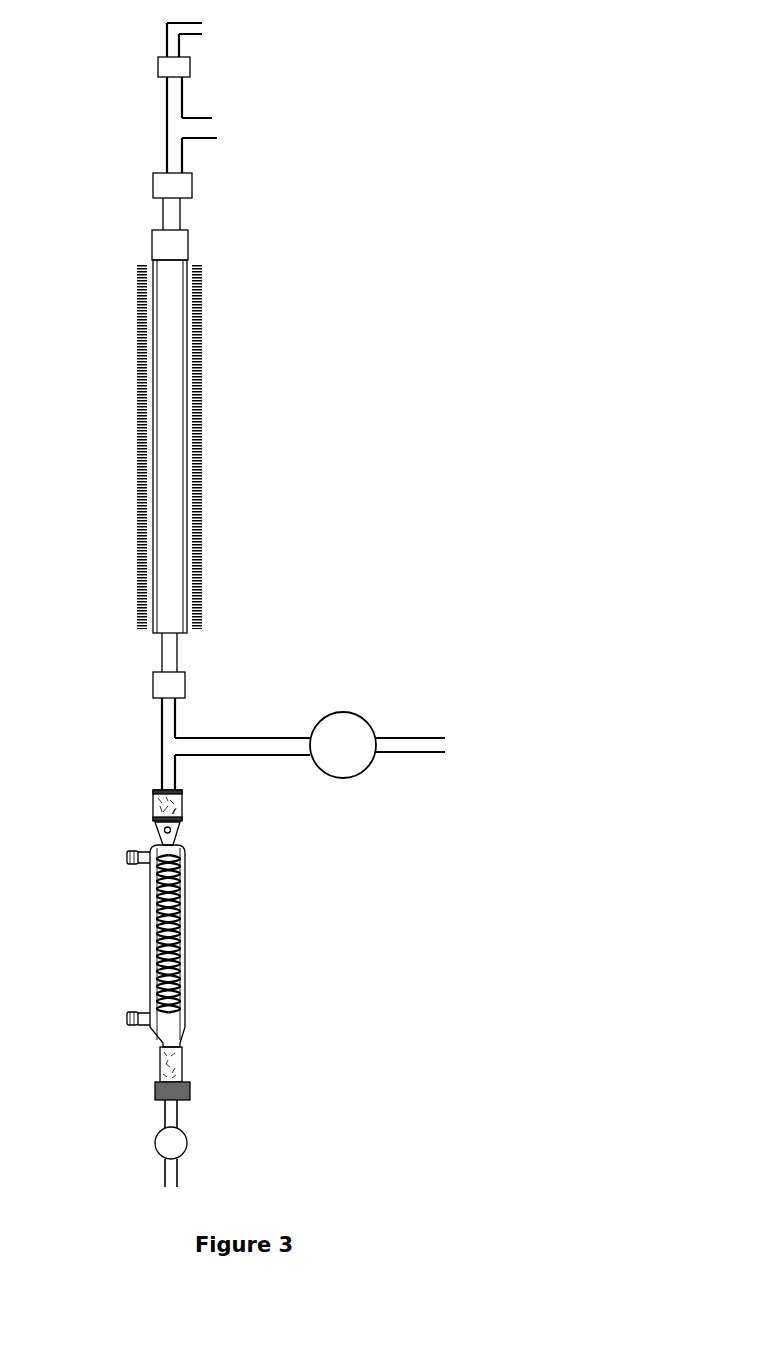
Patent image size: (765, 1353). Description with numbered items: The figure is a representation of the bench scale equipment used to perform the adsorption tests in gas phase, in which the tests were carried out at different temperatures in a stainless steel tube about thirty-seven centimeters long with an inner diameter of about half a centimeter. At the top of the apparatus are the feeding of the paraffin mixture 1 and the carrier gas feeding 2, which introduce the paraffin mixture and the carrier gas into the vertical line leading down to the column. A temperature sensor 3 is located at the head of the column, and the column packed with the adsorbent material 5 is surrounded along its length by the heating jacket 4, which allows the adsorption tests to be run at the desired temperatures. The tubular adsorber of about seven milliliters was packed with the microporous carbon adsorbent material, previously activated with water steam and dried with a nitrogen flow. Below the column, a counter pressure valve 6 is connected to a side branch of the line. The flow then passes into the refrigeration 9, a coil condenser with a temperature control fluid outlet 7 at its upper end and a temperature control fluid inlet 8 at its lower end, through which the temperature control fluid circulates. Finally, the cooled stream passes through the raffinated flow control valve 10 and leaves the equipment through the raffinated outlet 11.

The feeding of the paraffin mixture 1 is at (216, 28).
The carrier gas feeding 2 is at (232, 130).
The temperature sensor 3 is at (195, 267).
The heating jacket 4 is at (211, 368).
The column packed with the adsorbent material 5 is at (174, 398).
The counter pressure valve 6 is at (310, 745).
The temperature control fluid outlet 7 is at (120, 858).
The temperature control fluid inlet 8 is at (111, 1018).
The refrigeration 9 is at (209, 922).
The raffinated flow control valve 10 is at (189, 1143).
The raffinated outlet 11 is at (170, 1193).